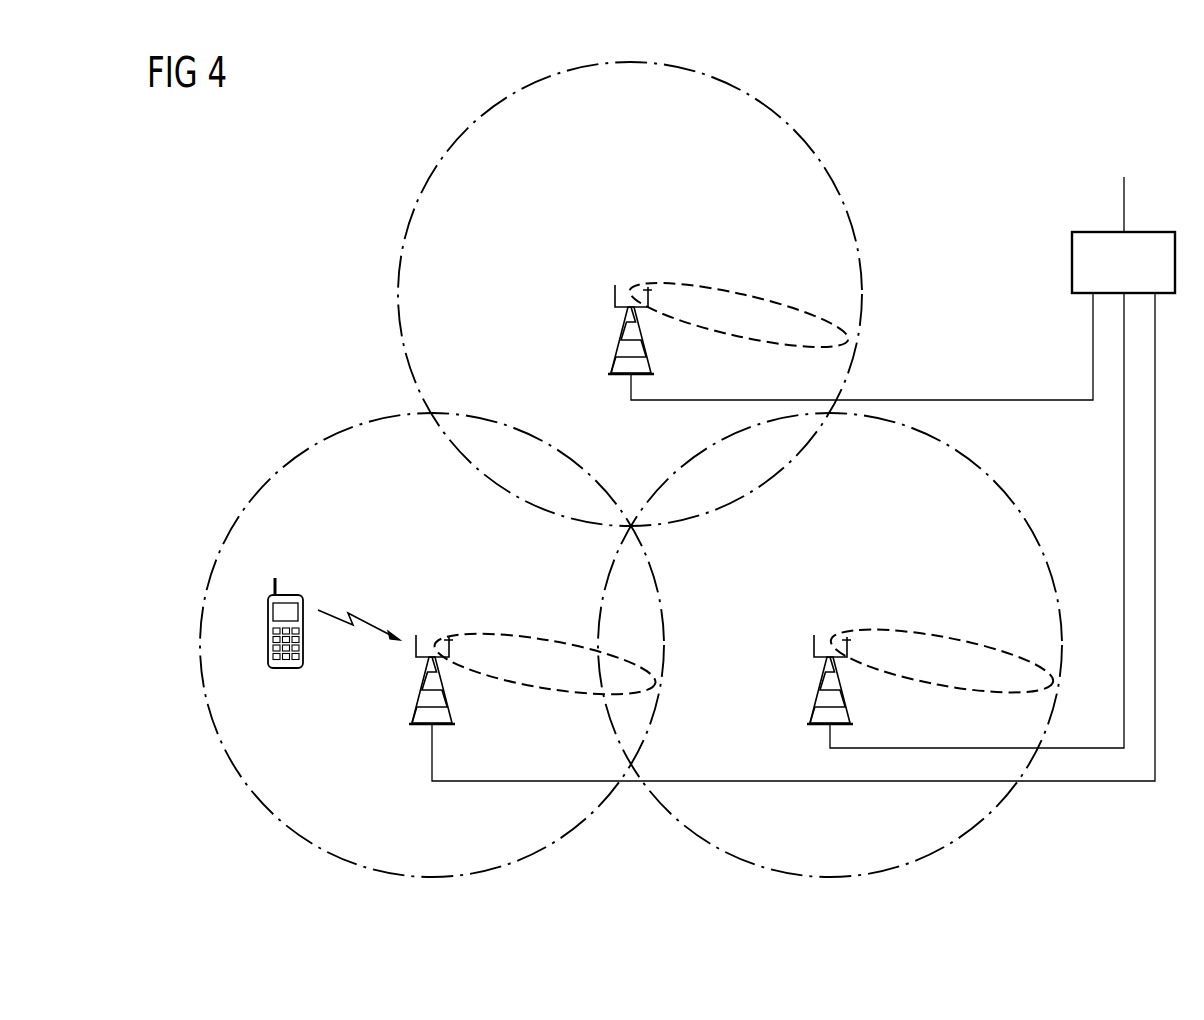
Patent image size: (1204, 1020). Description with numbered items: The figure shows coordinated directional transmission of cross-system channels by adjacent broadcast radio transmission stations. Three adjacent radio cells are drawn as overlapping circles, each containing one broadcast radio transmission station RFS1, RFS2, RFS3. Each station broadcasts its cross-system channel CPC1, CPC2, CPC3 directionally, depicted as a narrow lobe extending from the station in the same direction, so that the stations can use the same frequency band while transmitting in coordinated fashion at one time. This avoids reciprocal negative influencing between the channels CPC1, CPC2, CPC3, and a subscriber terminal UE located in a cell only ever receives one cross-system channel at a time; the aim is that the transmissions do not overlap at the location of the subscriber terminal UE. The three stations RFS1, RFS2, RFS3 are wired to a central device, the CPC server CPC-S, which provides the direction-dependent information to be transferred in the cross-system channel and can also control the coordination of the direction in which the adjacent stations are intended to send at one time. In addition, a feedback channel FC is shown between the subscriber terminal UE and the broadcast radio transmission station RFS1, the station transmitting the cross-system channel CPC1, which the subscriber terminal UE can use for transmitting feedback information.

The subscriber terminal UE is at (285, 641).
The feedback channel FC is at (359, 614).
The broadcast radio transmission station RFS1 is at (403, 679).
The broadcast radio transmission station RFS2 is at (800, 679).
The broadcast radio transmission station RFS3 is at (601, 329).
The cross-system channel CPC1 is at (545, 663).
The cross-system channel CPC2 is at (942, 661).
The cross-system channel CPC3 is at (739, 315).
The CPC server CPC-S is at (1123, 262).